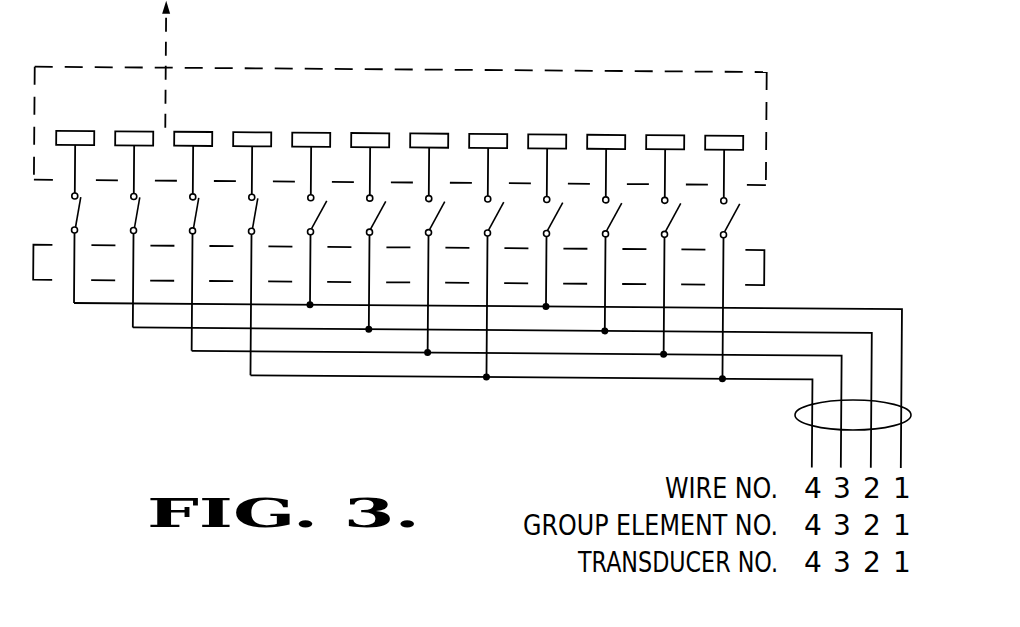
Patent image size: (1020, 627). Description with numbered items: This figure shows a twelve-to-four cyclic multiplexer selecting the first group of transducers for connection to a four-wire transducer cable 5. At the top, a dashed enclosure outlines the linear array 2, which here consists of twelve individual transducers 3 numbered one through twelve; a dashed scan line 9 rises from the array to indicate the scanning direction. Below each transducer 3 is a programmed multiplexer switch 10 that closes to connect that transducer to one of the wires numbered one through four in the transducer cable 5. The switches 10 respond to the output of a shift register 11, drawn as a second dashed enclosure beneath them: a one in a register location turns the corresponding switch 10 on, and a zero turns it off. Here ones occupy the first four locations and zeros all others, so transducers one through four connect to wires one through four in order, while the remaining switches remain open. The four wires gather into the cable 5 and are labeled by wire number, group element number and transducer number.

The linear array 2 is at (742, 67).
The transducer 3 is at (747, 141).
The transducer cable 5 is at (795, 411).
The scan line 9 is at (168, 54).
The multiplexer switch 10 is at (747, 216).
The shift register 11 is at (770, 267).